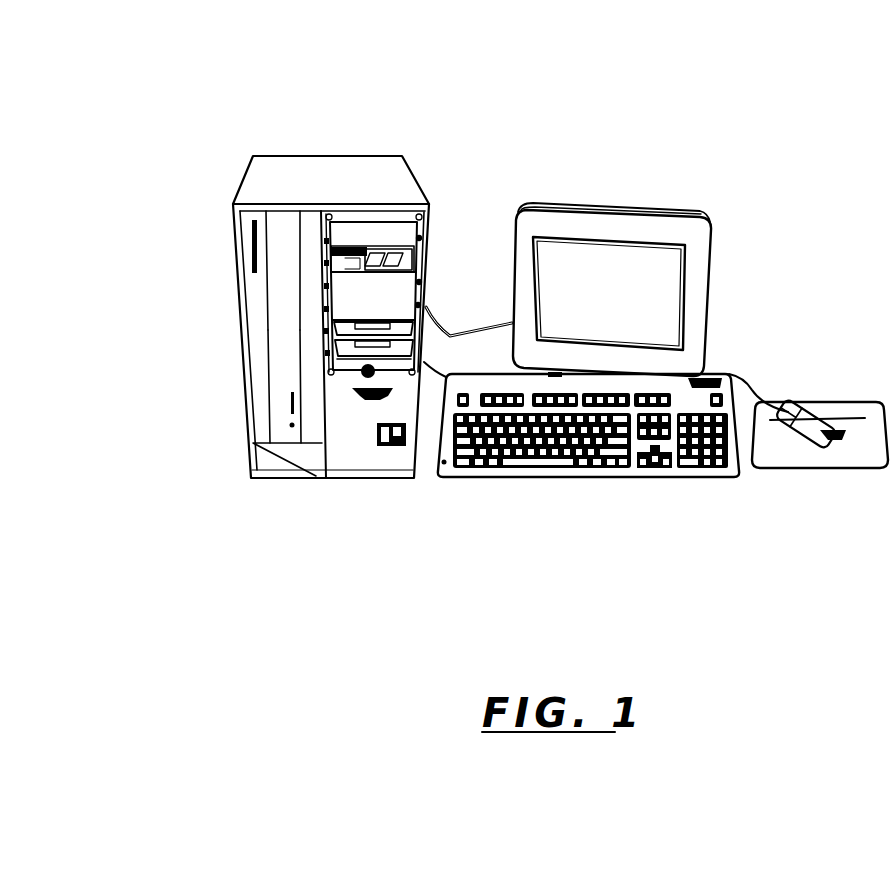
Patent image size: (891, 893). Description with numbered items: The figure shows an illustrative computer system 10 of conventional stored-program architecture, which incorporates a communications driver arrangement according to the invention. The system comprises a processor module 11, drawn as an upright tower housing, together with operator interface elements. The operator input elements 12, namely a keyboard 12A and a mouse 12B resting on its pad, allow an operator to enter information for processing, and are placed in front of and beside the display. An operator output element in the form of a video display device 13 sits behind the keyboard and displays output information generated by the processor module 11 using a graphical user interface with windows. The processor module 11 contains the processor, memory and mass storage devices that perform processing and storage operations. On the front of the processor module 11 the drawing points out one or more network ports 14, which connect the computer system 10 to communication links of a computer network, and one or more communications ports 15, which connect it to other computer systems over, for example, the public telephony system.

The computer system 10 is at (178, 89).
The processor module 11 is at (342, 156).
The operator input element(s) 12 is at (737, 518).
The keyboard 12A is at (624, 481).
The mouse 12B is at (880, 470).
The video display device 13 is at (718, 292).
The network ports 14 is at (240, 272).
The communications ports 15 is at (242, 337).